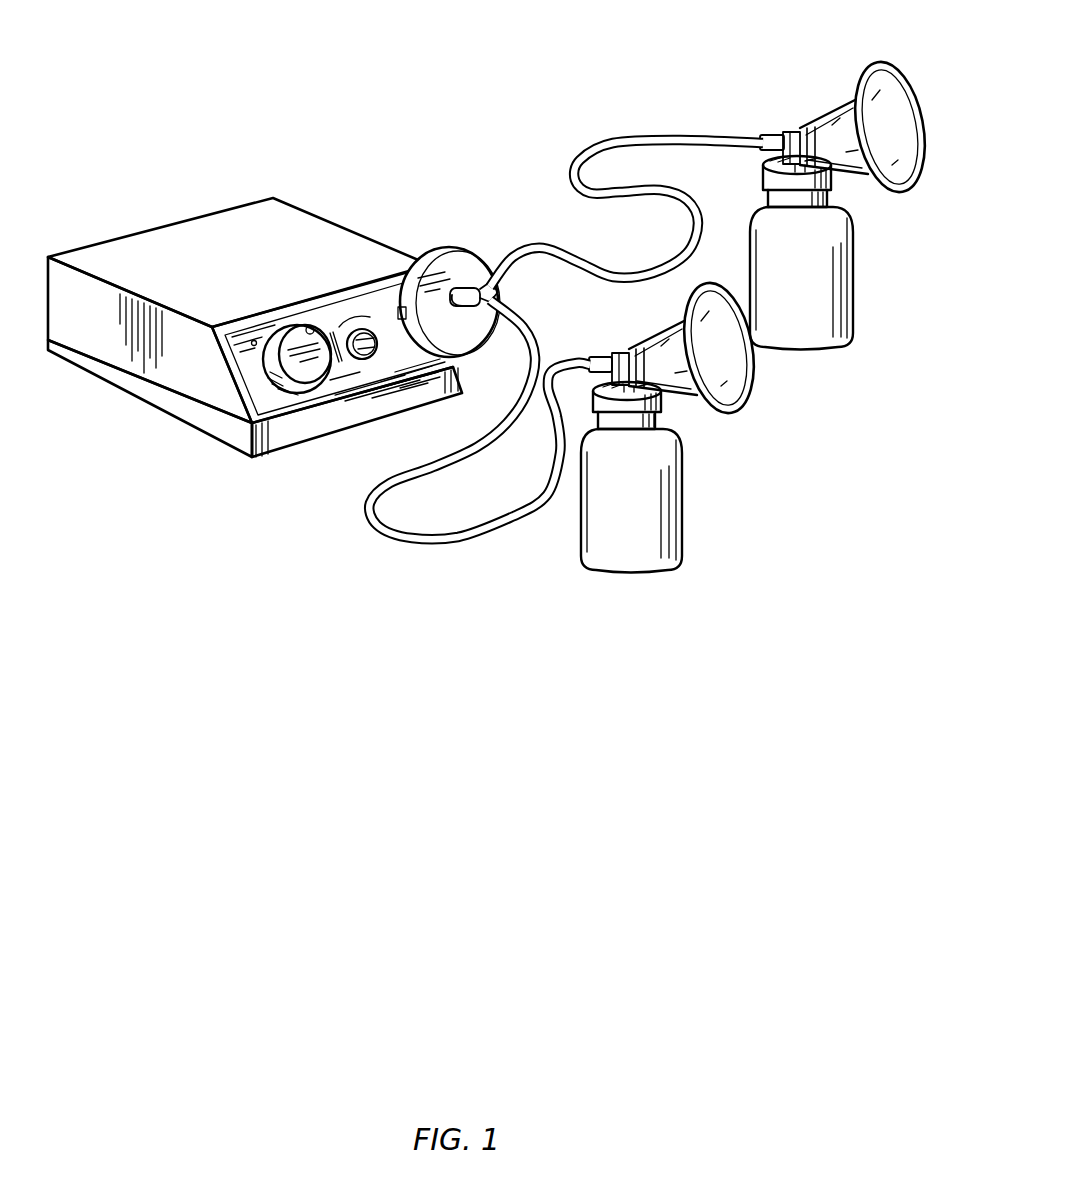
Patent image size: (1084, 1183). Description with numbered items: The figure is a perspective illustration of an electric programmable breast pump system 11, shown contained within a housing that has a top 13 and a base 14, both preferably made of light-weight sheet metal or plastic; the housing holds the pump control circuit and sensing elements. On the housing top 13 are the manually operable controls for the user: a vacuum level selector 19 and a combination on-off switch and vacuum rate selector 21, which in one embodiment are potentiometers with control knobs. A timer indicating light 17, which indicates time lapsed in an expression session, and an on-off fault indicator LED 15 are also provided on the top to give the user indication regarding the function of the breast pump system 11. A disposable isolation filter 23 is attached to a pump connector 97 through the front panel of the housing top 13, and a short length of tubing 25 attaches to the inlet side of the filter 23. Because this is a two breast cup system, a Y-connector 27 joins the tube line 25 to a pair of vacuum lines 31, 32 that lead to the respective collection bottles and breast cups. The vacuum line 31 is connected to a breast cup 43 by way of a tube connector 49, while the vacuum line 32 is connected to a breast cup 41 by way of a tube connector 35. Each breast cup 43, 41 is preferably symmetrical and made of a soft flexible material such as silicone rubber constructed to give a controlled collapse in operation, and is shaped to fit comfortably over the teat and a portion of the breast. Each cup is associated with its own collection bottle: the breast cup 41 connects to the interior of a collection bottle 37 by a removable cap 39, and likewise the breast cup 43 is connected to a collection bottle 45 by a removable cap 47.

The electric programmable breast pump system 11 is at (250, 507).
The housing top 13 is at (152, 242).
The base 14 is at (145, 400).
The on-off fault indicator LED 15 is at (347, 302).
The timer indicating light 17 is at (331, 329).
The vacuum level selector 19 is at (366, 329).
The combination on-off switch and vacuum rate selector 21 is at (299, 325).
The disposable isolation filter 23 is at (428, 262).
The tubing 25 is at (465, 304).
The Y-connector 27 is at (480, 286).
The vacuum line 31 is at (602, 140).
The vacuum line 32 is at (423, 544).
The tube connector 35 is at (600, 356).
The collection bottle 37 is at (683, 470).
The removable cap 39 is at (663, 403).
The breast cup 41 is at (727, 403).
The breast cup 43 is at (877, 62).
The collection bottle 45 is at (853, 330).
The removable cap 47 is at (830, 173).
The tube connector 49 is at (768, 133).
The pump connector 97 is at (400, 308).